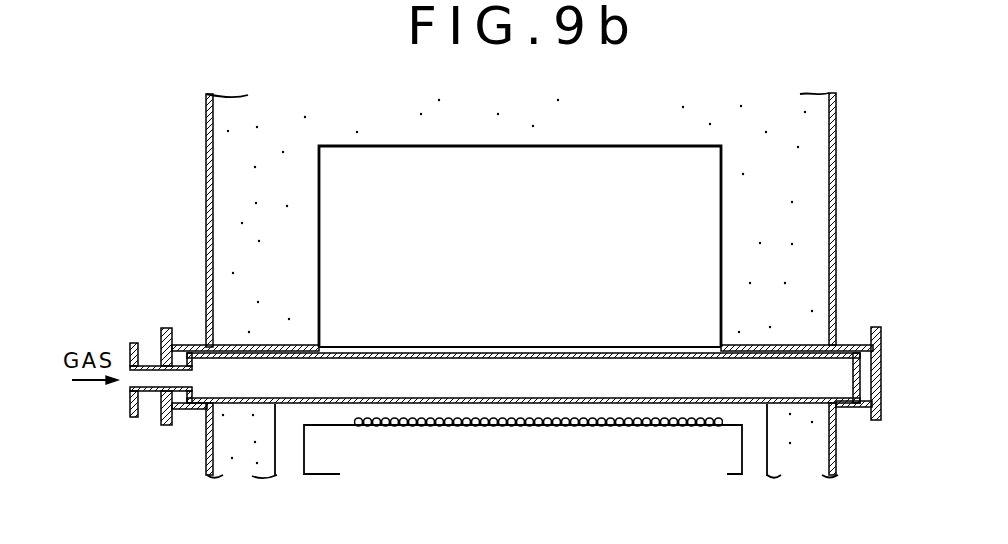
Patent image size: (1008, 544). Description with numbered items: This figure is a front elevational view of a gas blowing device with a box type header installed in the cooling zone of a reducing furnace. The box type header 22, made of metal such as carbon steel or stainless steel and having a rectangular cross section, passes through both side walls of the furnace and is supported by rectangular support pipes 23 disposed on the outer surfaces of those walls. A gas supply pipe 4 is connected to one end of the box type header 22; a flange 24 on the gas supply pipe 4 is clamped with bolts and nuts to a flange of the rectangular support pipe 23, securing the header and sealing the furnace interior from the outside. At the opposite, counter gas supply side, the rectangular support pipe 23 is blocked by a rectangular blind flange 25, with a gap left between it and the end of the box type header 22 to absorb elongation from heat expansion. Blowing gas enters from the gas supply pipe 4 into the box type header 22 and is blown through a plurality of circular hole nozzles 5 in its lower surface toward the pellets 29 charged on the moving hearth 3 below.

The moving hearth 3 is at (523, 463).
The gas supply pipe 4 is at (152, 365).
The nozzle 5 is at (511, 403).
The box type header 22 is at (432, 352).
The rectangular support pipe 23 is at (189, 409).
The flange 24 is at (151, 362).
The rectangular blind flange 25 is at (882, 356).
The pellets 29 is at (717, 426).